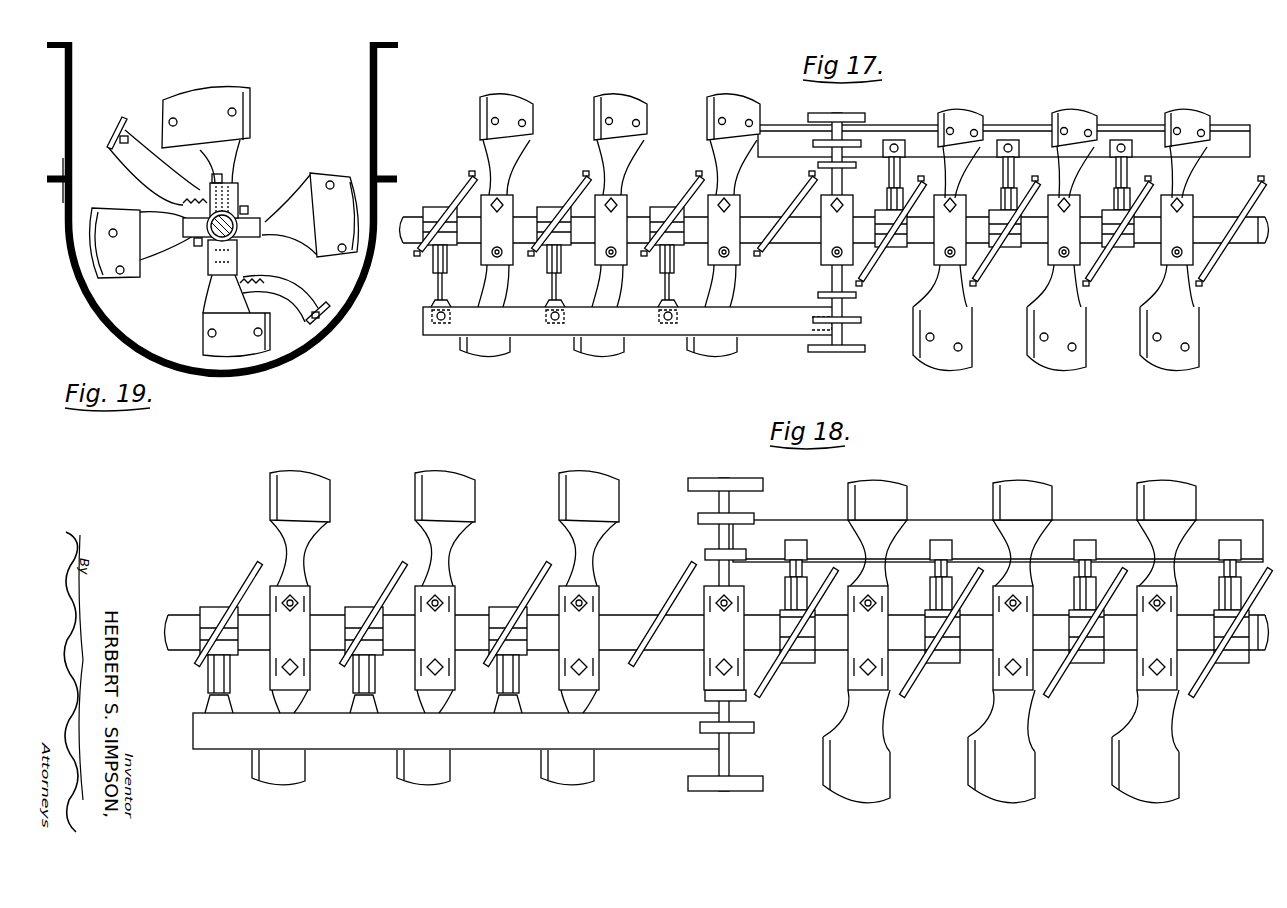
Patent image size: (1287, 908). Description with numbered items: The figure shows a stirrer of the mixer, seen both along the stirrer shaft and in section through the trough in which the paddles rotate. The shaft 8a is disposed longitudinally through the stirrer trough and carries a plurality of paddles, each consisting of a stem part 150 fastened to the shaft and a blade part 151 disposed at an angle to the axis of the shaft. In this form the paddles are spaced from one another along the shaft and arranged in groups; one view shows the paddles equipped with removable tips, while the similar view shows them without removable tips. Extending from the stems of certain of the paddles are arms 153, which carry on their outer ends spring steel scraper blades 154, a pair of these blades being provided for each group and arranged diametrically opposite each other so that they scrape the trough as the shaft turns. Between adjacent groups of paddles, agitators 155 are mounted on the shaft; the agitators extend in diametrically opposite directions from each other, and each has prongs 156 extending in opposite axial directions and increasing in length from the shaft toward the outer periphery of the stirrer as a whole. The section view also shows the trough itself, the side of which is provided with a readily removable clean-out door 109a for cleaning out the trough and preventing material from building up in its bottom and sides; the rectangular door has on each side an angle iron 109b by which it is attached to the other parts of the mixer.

In FIG. 17, the shaft 8a is at (414, 216).
In FIG. 18, the shaft 8a is at (193, 613).
In FIG. 19, the shaft 8a is at (207, 243).
In FIG. 19, the clean-out door 109a is at (74, 74).
In FIG. 19, the angle iron 109b is at (380, 57).
In FIG. 17, the stem part 150 is at (508, 162).
In FIG. 18, the stem part 150 is at (300, 575).
In FIG. 19, the stem part 150 is at (250, 185).
In FIG. 17, the blade part 151 is at (475, 182).
In FIG. 18, the blade part 151 is at (330, 503).
In FIG. 19, the blade part 151 is at (213, 98).
In FIG. 17, the arms 153 is at (437, 270).
In FIG. 18, the arms 153 is at (207, 695).
In FIG. 19, the arms 153 is at (128, 175).
In FIG. 17, the spring steel scraper blades 154 is at (568, 322).
In FIG. 18, the spring steel scraper blades 154 is at (362, 742).
In FIG. 19, the spring steel scraper blades 154 is at (120, 128).
In FIG. 17, the agitators 155 is at (816, 156).
In FIG. 18, the agitators 155 is at (700, 514).
In FIG. 17, the prongs 156 is at (855, 125).
In FIG. 18, the prongs 156 is at (740, 545).